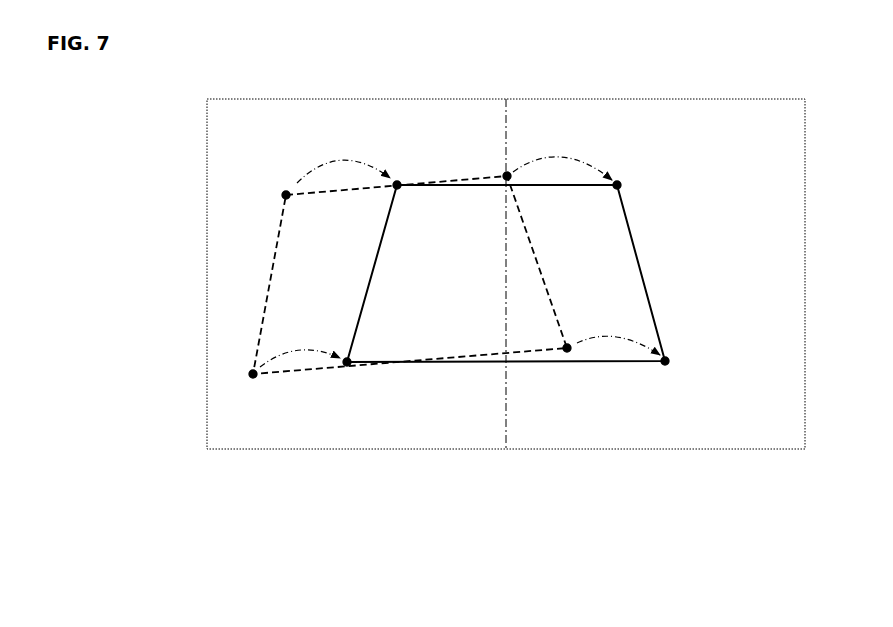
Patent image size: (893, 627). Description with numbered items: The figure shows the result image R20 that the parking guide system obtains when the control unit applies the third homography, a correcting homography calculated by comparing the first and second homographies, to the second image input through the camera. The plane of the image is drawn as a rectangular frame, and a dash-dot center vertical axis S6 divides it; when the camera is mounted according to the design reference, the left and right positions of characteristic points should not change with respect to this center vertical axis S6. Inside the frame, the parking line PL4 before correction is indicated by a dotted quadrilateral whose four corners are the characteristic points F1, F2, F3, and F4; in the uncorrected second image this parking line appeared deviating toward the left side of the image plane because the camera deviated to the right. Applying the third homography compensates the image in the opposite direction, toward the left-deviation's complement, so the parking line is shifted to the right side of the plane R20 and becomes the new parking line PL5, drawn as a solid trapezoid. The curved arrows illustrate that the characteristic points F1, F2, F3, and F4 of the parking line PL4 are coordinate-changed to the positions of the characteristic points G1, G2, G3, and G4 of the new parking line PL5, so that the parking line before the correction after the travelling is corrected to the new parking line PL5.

The result image R20 is at (207, 285).
The center vertical axis S6 is at (508, 393).
The parking line PL4 is at (317, 368).
The new parking line PL5 is at (597, 362).
The characteristic point F1 is at (268, 193).
The characteristic point F2 is at (490, 163).
The characteristic point F3 is at (255, 390).
The characteristic point F4 is at (581, 332).
The characteristic point G1 is at (411, 201).
The characteristic point G2 is at (637, 187).
The characteristic point G3 is at (368, 348).
The characteristic point G4 is at (684, 368).